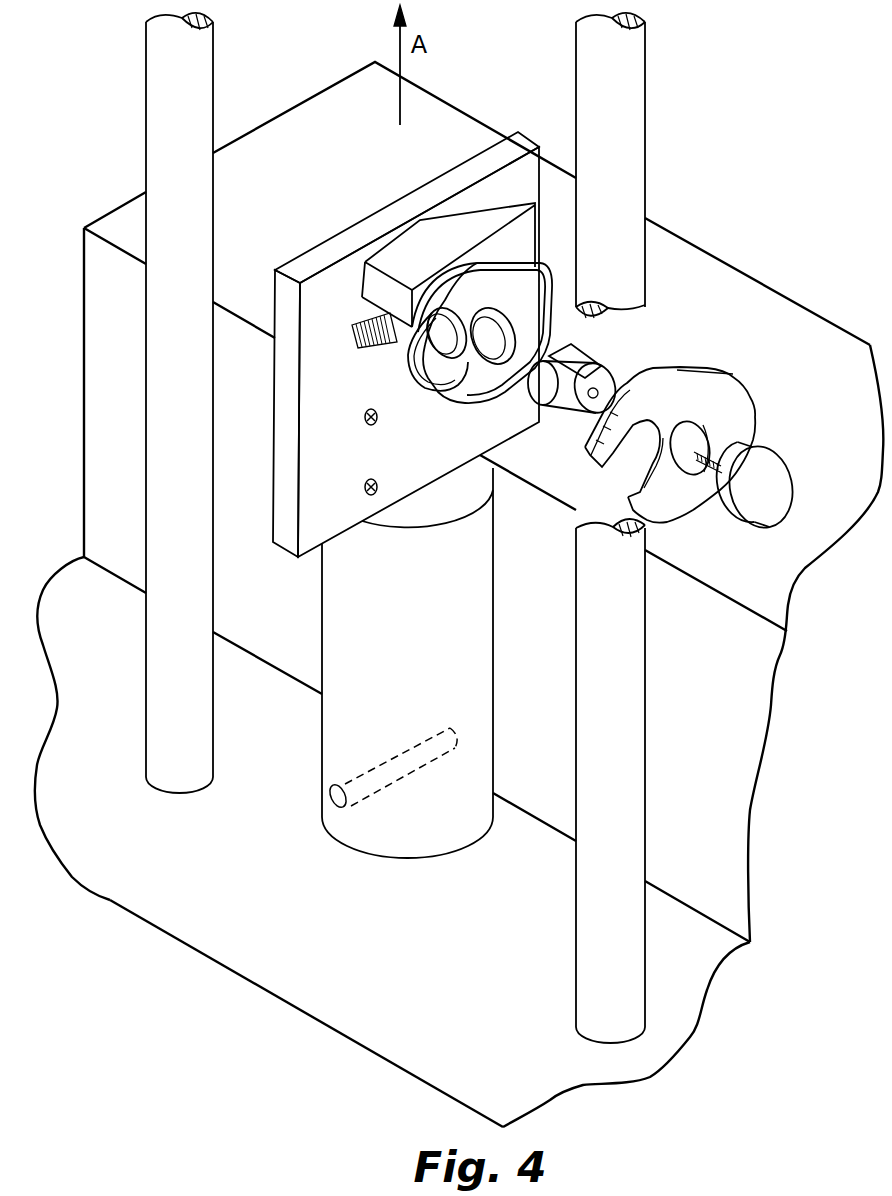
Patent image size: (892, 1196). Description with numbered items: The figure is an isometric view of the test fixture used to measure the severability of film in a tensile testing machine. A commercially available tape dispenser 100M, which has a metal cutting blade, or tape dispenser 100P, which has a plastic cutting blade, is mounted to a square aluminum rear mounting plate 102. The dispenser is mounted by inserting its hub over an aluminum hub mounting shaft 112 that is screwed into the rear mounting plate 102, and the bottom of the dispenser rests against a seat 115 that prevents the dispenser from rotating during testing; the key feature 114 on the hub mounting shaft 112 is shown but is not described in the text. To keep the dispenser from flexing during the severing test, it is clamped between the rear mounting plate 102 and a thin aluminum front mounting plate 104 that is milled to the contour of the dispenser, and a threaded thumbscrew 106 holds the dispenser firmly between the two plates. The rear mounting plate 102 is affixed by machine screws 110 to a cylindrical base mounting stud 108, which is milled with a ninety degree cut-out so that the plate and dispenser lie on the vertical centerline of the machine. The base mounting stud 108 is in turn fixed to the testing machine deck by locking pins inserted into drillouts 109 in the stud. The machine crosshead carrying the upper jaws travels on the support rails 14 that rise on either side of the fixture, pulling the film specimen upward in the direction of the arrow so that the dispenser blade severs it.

The support rails 14 is at (162, 92).
The rear mounting plate 102 is at (348, 242).
The front mounting plate 104 is at (713, 392).
The threaded thumbscrew 106 is at (777, 495).
The base mounting stud 108 is at (322, 742).
The drillouts 109 is at (386, 750).
The machine screws 110 is at (372, 477).
The hub mounting shaft 112 is at (602, 402).
The key 114 is at (600, 363).
The seat 115 is at (483, 200).
The tape dispenser 100P is at (492, 403).
The tape dispenser 100M is at (484, 438).